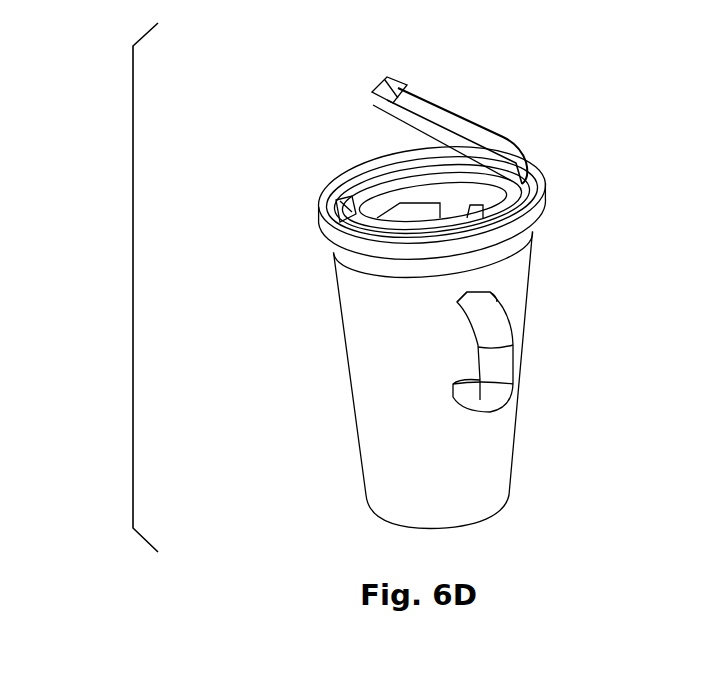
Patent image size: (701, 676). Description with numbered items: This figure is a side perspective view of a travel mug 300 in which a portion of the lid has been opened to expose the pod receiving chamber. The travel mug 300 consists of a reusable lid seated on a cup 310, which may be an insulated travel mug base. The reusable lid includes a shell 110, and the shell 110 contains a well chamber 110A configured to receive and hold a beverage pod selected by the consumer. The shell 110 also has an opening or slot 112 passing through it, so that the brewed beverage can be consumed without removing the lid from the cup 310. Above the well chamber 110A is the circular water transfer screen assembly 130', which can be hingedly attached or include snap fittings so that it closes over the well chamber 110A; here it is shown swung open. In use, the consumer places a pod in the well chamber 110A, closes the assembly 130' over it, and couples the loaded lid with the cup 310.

The travel mug 300 is at (133, 305).
The shell 110 is at (517, 218).
The well chamber 110A is at (403, 180).
The slot 112 is at (338, 208).
The circular water transfer screen assembly 130' is at (491, 115).
The cup 310 is at (462, 506).